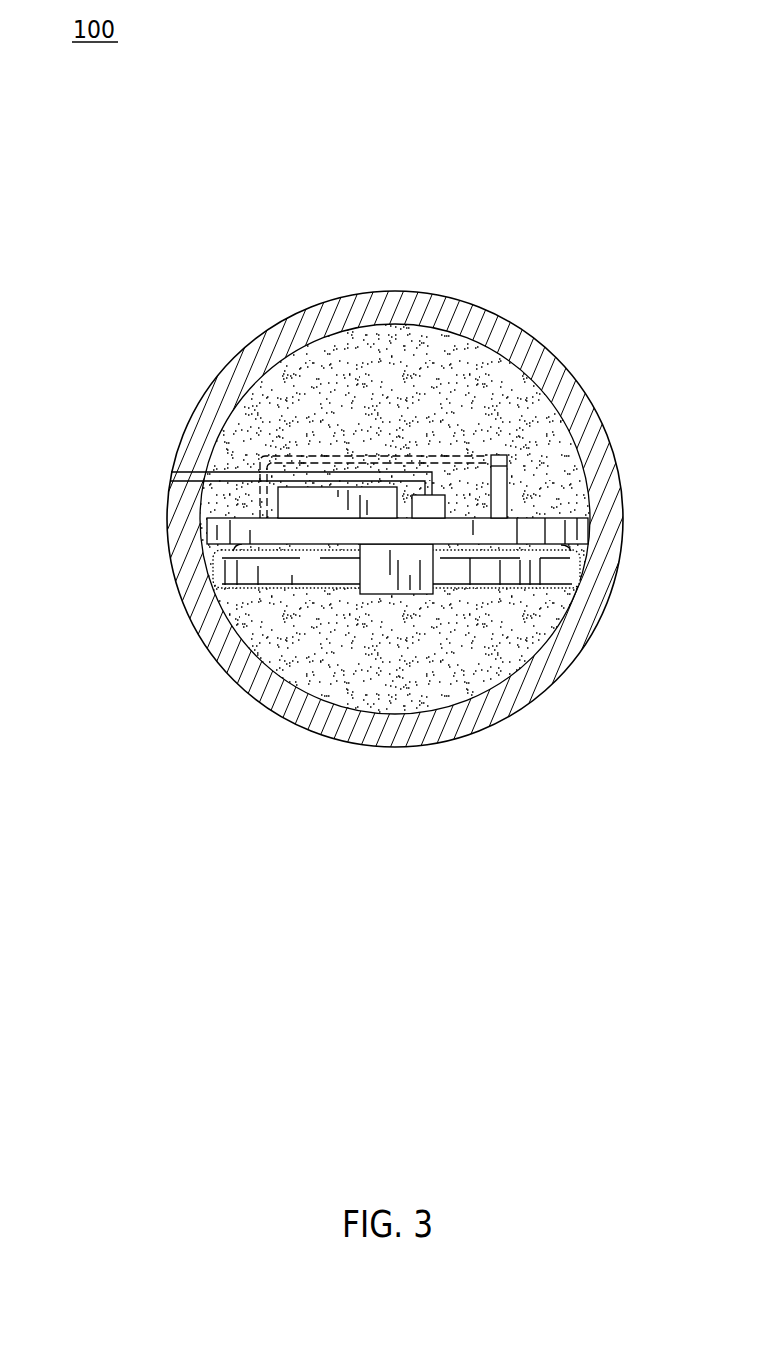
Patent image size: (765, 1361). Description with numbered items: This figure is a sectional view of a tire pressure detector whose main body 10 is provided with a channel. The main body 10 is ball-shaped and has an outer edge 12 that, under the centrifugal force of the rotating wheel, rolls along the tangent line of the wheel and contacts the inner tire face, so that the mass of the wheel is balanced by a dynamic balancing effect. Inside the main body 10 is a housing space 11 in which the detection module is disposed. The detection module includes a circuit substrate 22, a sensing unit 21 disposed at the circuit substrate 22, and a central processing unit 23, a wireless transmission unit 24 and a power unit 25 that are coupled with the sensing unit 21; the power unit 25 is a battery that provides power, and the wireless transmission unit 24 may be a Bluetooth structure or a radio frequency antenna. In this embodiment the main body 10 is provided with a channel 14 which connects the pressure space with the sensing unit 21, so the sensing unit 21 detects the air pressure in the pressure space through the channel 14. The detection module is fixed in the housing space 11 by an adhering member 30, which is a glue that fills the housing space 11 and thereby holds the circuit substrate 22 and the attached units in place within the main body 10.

The main body 10 is at (462, 295).
The housing space 11 is at (528, 422).
The outer edge 12 is at (593, 638).
The channel 14 is at (191, 472).
The sensing unit 21 is at (432, 510).
The circuit substrate 22 is at (275, 533).
The central processing unit 23 is at (318, 500).
The wireless transmission unit 24 is at (498, 500).
The power unit 25 is at (325, 568).
The adhering member 30 is at (368, 390).